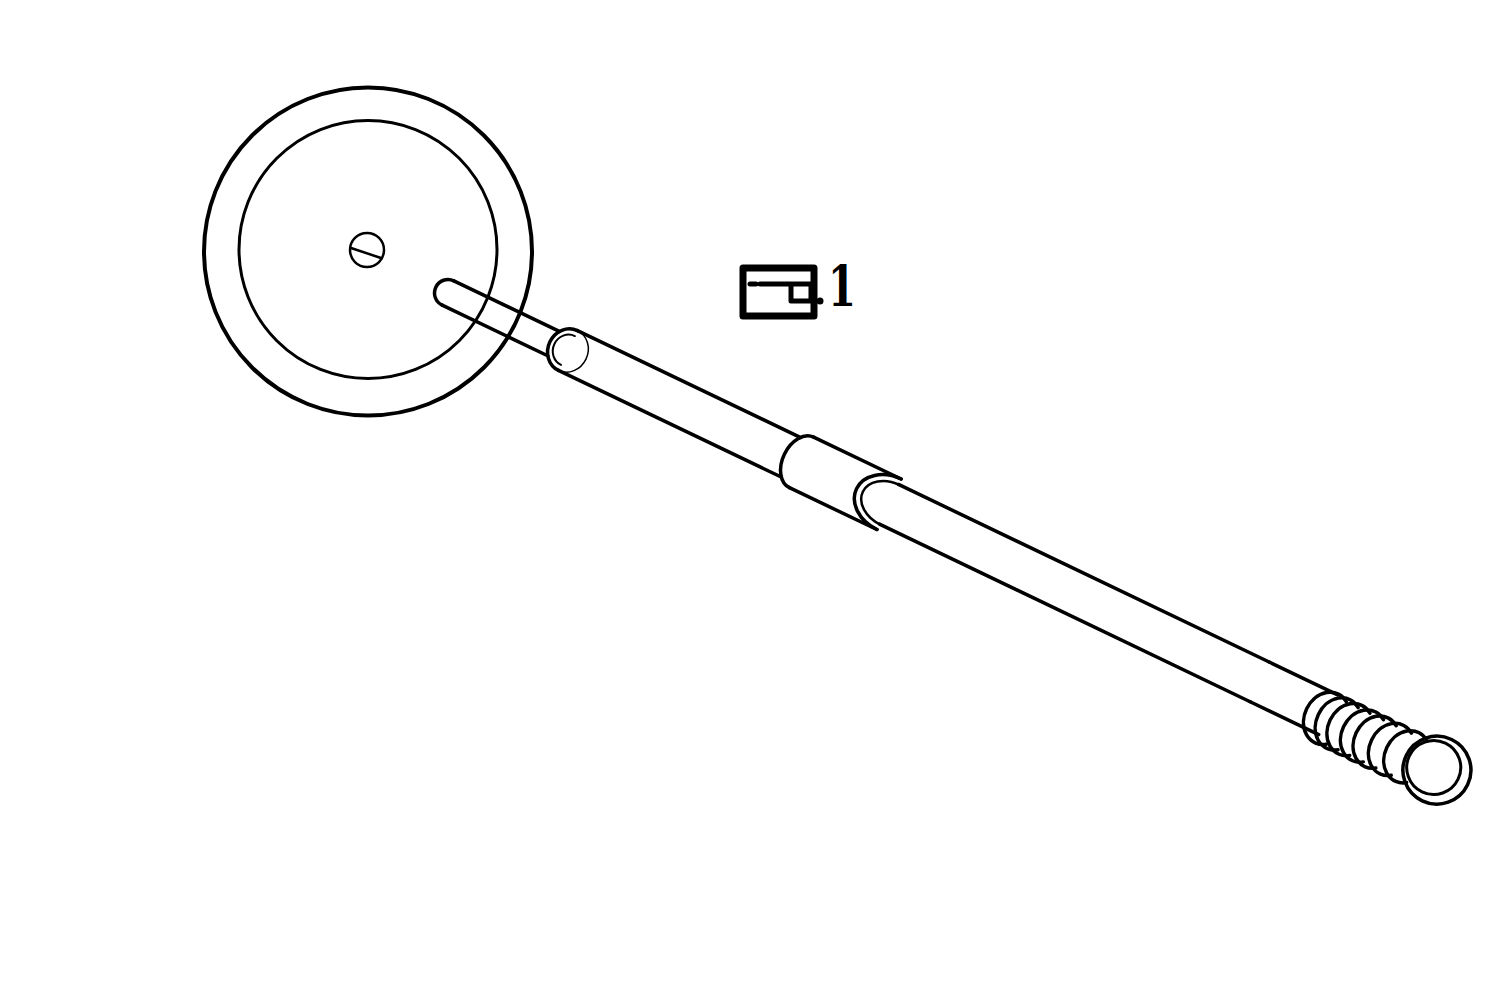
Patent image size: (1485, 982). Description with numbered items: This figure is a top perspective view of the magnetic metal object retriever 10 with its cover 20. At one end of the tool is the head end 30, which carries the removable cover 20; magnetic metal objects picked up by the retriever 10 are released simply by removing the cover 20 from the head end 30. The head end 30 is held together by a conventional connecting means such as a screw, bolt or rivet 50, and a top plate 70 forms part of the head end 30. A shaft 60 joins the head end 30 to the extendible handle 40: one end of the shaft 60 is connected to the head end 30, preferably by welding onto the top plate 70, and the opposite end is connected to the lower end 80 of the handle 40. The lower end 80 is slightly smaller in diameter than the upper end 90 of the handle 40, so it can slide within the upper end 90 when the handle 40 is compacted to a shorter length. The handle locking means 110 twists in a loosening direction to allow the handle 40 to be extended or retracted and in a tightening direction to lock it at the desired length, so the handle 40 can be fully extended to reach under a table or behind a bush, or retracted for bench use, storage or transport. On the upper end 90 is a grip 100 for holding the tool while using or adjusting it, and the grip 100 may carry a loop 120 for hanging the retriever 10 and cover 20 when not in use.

The magnetic metal object retriever 10 is at (1047, 453).
The cover 20 is at (440, 122).
The head end 30 is at (263, 280).
The extendible handle 40 is at (1046, 600).
The screw, bolt or rivet 50 is at (375, 243).
The shaft 60 is at (525, 328).
The top plate 70 is at (358, 332).
The lower end of the handle 80 is at (672, 412).
The upper end of the handle 90 is at (1272, 700).
The grip 100 is at (1372, 723).
The handle locking means 110 is at (805, 487).
The loop 120 is at (1450, 788).